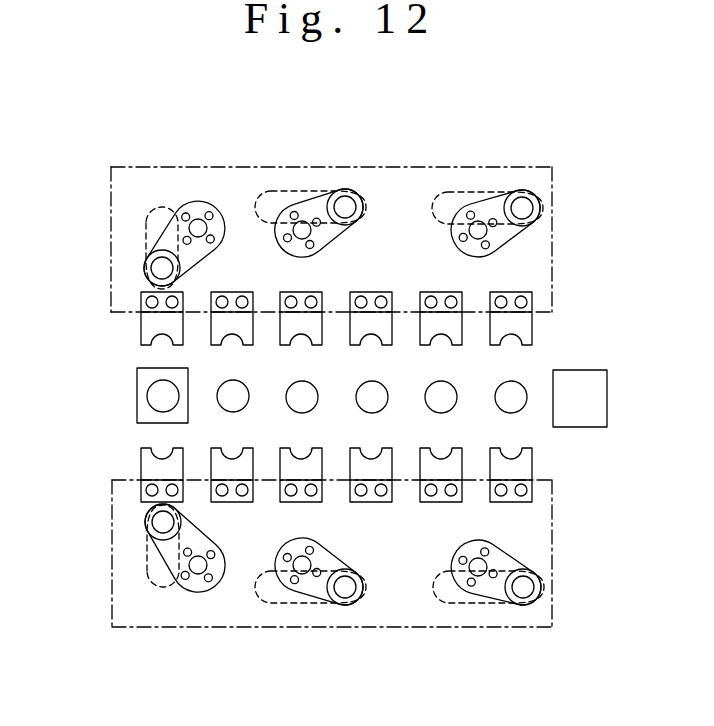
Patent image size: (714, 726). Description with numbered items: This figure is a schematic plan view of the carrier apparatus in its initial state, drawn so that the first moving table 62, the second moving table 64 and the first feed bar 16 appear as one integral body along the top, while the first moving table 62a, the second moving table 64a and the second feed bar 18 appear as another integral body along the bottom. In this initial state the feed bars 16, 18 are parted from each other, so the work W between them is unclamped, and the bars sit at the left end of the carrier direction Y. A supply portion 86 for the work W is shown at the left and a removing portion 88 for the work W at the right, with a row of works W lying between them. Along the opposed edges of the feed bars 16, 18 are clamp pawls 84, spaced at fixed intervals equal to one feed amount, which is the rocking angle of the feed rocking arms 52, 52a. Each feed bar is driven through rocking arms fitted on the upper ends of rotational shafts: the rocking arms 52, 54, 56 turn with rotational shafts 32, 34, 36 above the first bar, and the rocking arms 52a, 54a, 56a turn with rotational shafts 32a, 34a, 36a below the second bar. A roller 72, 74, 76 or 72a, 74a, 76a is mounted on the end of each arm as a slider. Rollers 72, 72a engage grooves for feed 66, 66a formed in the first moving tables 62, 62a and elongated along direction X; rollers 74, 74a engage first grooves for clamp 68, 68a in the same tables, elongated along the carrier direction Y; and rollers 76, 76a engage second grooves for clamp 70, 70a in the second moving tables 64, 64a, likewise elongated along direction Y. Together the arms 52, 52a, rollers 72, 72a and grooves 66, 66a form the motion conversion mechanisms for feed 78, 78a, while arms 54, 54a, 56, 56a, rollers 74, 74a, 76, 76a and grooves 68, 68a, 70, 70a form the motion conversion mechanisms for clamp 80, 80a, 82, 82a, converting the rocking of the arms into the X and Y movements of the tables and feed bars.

The feed bar 16 is at (403, 166).
The feed bar 18 is at (410, 628).
The rotational shaft 32 is at (193, 220).
The rotational shaft 34 is at (309, 223).
The rotational shaft 36 is at (485, 224).
The rocking arm 52 is at (221, 211).
The rocking arm 54 is at (280, 213).
The rocking arm 56 is at (476, 204).
The first moving table 62 is at (110, 197).
The second moving table 64 is at (546, 248).
The groove for feed 66 is at (160, 207).
The first groove for clamp 68 is at (263, 190).
The second groove for clamp 70 is at (445, 190).
The roller 72 is at (147, 284).
The roller 74 is at (346, 189).
The roller 76 is at (521, 191).
The motion conversion mechanism for feed 78 is at (138, 253).
The motion conversion mechanism for clamp 80 is at (371, 185).
The motion conversion mechanism for clamp 82 is at (550, 188).
The clamp pawl 84 is at (140, 327).
The supply portion 86 is at (137, 404).
The removing portion 88 is at (592, 420).
The work W is at (150, 386).
The rotational shaft 32a is at (195, 574).
The rotational shaft 34a is at (305, 574).
The rotational shaft 36a is at (484, 575).
The rocking arm 52a is at (204, 591).
The rocking arm 54a is at (295, 592).
The rocking arm 56a is at (472, 593).
The first moving table 62a is at (110, 557).
The second moving table 64a is at (546, 542).
The groove for feed 66a is at (147, 585).
The first groove for clamp 68a is at (260, 590).
The second groove for clamp 70a is at (438, 603).
The roller 72a is at (147, 513).
The roller 74a is at (344, 605).
The roller 76a is at (541, 587).
The motion conversion mechanism for feed 78a is at (135, 548).
The motion conversion mechanism for clamp 80a is at (375, 606).
The motion conversion mechanism for clamp 82a is at (524, 613).